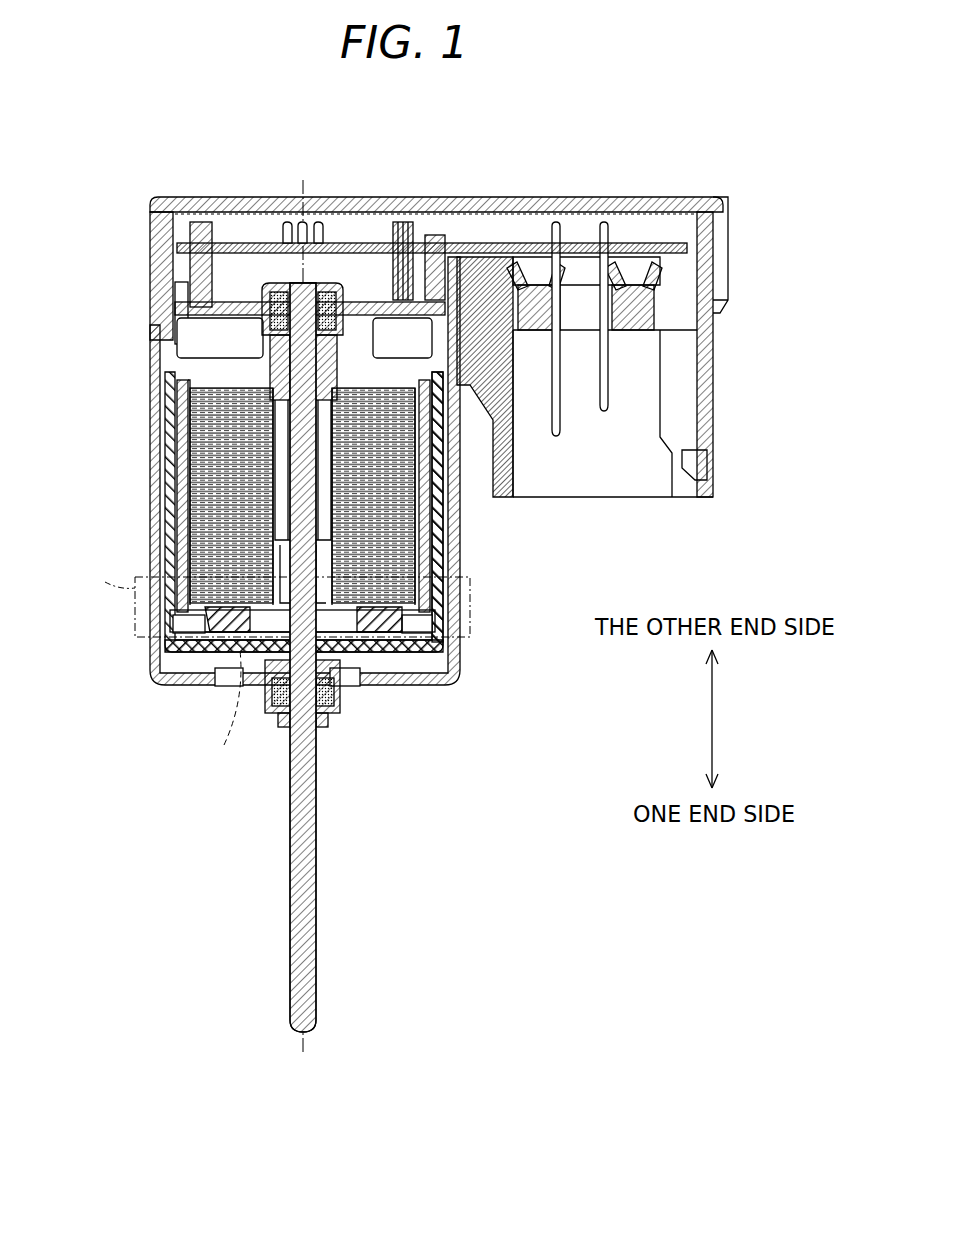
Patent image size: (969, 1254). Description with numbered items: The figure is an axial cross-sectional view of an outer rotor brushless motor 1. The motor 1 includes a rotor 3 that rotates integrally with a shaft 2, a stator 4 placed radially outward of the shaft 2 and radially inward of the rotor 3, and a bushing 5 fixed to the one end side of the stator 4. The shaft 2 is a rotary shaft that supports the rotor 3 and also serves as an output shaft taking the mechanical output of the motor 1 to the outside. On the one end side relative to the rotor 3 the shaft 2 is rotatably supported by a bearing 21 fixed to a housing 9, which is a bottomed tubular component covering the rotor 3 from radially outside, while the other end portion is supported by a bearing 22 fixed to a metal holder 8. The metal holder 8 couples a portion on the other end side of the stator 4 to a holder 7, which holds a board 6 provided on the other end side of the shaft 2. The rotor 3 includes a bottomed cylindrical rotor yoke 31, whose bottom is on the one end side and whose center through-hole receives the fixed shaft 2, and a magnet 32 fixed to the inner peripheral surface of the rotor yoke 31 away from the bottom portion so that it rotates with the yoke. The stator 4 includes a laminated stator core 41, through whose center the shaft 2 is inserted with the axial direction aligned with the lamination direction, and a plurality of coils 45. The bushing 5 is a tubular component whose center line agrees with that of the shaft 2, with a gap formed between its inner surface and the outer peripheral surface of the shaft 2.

The motor 1 is at (124, 186).
The shaft 2 is at (318, 962).
The rotor 3 is at (188, 655).
The stator 4 is at (428, 650).
The bushing 5 is at (352, 660).
The board 6 is at (478, 242).
The holder 7 is at (151, 253).
The metal holder 8 is at (257, 352).
The housing 9 is at (150, 405).
The bearing 21 is at (325, 715).
The bearing 22 is at (322, 290).
The rotor yoke 31 is at (167, 475).
The magnet 32 is at (172, 518).
The stator core 41 is at (450, 588).
The coils 45 is at (178, 622).